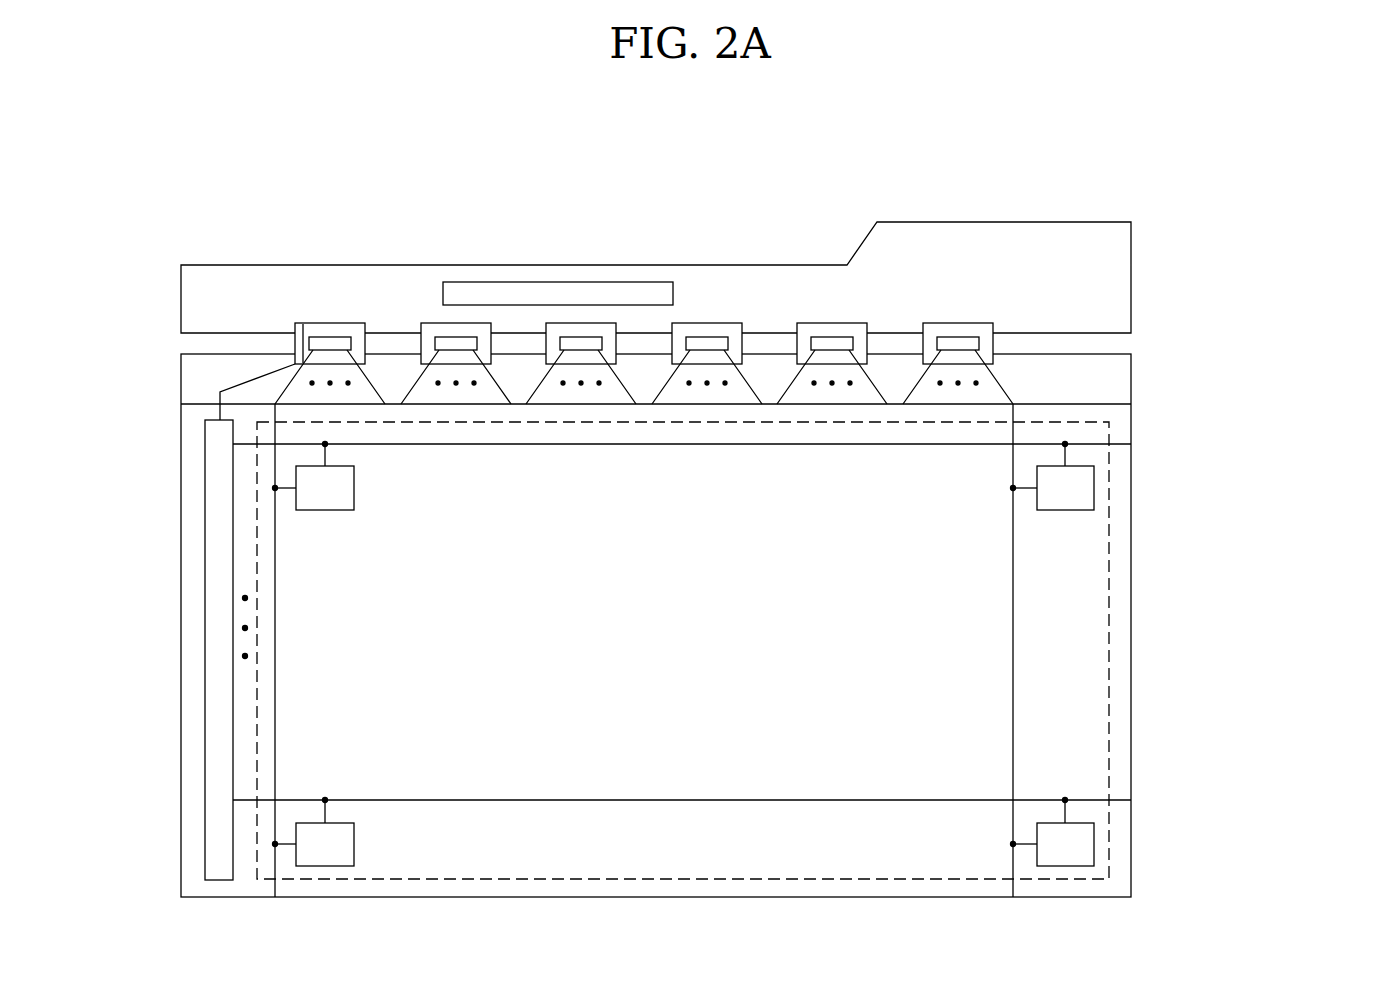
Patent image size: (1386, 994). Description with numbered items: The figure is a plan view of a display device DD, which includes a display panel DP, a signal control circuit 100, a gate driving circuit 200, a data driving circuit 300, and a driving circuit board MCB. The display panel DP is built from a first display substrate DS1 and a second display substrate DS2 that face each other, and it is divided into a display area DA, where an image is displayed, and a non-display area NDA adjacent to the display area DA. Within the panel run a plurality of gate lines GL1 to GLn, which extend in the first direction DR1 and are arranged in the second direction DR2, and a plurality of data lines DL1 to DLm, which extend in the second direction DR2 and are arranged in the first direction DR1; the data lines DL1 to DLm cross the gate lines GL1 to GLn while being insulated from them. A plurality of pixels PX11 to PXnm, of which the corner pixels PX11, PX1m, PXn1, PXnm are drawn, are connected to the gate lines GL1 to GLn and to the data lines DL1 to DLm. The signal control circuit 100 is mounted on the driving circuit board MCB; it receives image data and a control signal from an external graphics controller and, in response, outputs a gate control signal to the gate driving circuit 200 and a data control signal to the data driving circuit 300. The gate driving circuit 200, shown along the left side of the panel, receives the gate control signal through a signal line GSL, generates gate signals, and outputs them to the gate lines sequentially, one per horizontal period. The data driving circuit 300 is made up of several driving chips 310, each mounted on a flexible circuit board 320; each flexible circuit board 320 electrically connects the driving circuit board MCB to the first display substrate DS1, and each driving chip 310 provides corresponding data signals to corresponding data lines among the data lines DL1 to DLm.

The signal control circuit 100 is at (582, 282).
The gate driving circuit 200 is at (205, 622).
The data driving circuit 300 is at (644, 284).
The driving chip 310 is at (338, 337).
The flexible circuit board 320 is at (313, 323).
The driving circuit board MCB is at (745, 265).
The display panel DP is at (1224, 360).
The first display substrate DS1 is at (1131, 370).
The second display substrate DS2 is at (1113, 404).
The display area DA is at (1108, 560).
The non-display area NDA is at (1125, 645).
The signal line GSL is at (243, 383).
The first gate line GL1 is at (648, 444).
The n-th gate line GLn is at (660, 800).
The first data line DL1 is at (275, 660).
The m-th data line DLm is at (1013, 660).
The pixel PX11 is at (314, 476).
The pixel PX1m is at (1053, 476).
The pixel PXn1 is at (314, 832).
The pixel PXnm is at (1053, 832).
The display device DD is at (1118, 167).
The first direction DR1 is at (1260, 913).
The second direction DR2 is at (1260, 913).